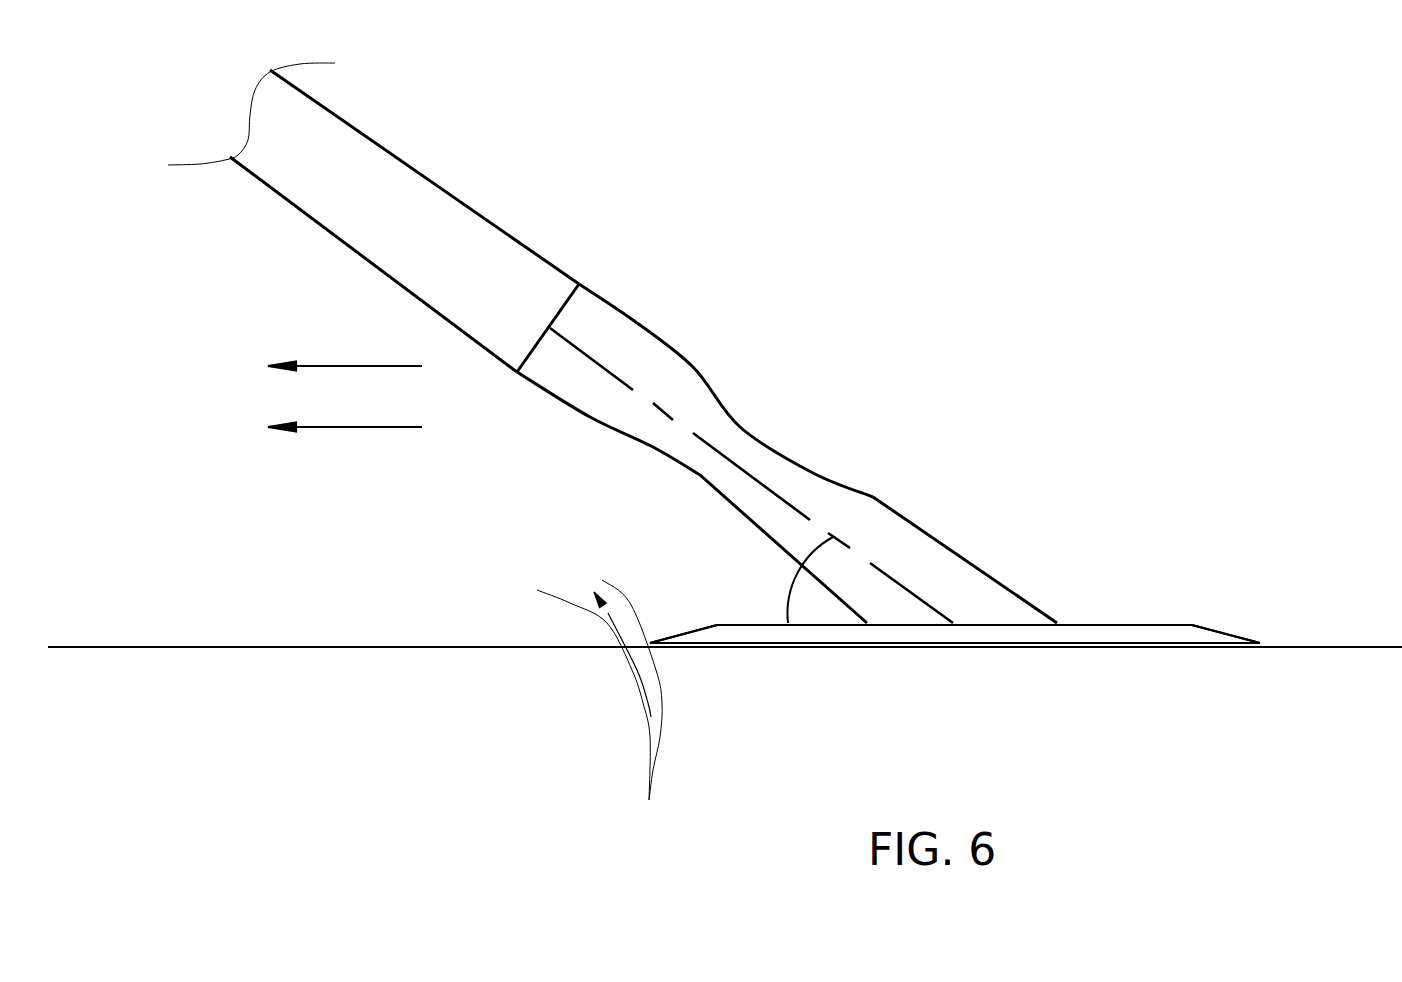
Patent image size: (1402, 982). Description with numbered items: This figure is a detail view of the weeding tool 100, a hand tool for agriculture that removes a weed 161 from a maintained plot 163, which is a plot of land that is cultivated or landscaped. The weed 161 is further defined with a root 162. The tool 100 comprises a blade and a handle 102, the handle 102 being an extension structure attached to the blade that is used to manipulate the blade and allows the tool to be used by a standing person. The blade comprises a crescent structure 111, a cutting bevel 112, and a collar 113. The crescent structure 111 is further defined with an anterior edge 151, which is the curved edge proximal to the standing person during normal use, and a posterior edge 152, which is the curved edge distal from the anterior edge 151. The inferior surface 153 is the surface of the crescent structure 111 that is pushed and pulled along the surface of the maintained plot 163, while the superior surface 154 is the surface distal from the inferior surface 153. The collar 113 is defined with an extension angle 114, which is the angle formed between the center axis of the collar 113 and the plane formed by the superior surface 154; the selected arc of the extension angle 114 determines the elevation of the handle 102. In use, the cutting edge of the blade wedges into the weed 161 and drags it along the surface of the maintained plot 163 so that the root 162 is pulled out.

The weeding tool 100 is at (787, 452).
The handle 102 is at (493, 229).
The crescent structure 111 is at (1193, 625).
The cutting bevel 112 is at (690, 650).
The collar 113 is at (928, 537).
The extension angle 114 is at (783, 597).
The anterior edge 151 is at (1232, 630).
The posterior edge 152 is at (688, 622).
The inferior surface 153 is at (1112, 646).
The superior surface 154 is at (1110, 625).
The weed 161 is at (573, 602).
The root 162 is at (648, 725).
The maintained plot 163 is at (1333, 646).